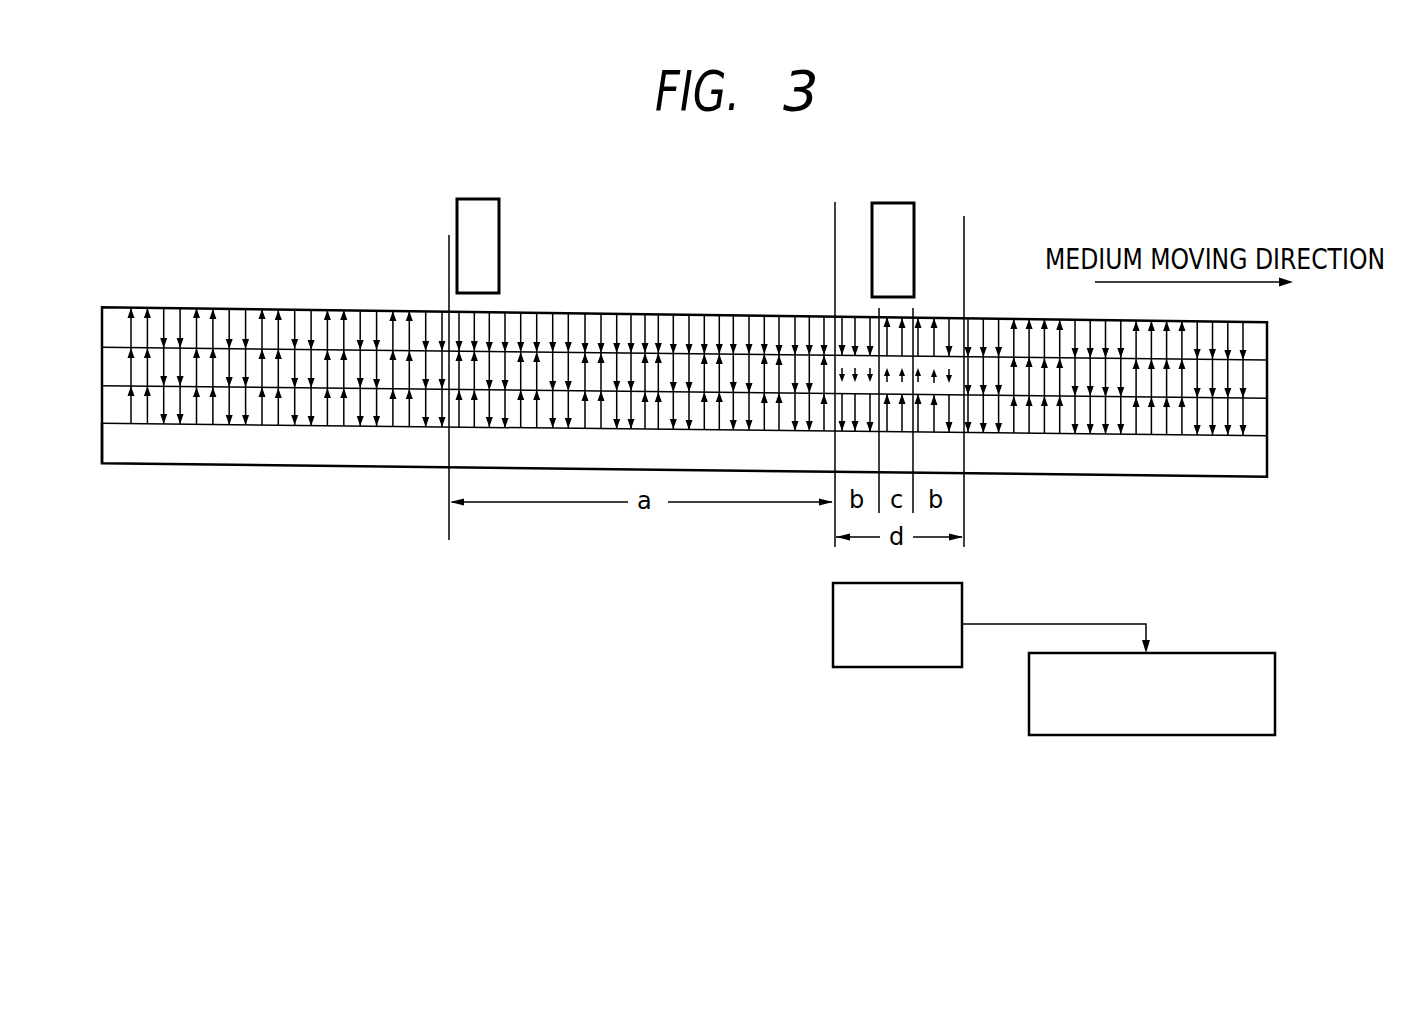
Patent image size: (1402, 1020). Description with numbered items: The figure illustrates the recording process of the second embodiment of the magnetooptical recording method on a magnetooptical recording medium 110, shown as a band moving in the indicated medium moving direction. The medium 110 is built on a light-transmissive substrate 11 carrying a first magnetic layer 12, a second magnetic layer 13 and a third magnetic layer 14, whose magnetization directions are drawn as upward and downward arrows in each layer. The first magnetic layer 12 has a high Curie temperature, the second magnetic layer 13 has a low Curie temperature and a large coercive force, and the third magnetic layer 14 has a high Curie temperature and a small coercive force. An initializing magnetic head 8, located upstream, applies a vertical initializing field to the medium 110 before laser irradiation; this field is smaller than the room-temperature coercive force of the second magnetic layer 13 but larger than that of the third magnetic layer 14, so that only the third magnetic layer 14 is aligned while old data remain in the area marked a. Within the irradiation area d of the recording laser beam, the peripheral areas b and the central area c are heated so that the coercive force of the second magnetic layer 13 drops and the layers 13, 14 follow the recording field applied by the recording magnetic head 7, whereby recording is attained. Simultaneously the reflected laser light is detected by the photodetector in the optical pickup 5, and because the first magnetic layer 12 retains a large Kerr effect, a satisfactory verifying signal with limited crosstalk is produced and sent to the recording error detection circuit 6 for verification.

The magnetooptical recording medium 110 is at (78, 293).
The light-transmissive substrate 11 is at (1267, 453).
The first magnetic layer 12 is at (1267, 412).
The second magnetic layer 13 is at (1267, 372).
The third magnetic layer 14 is at (1267, 325).
The initializing magnetic head 8 is at (499, 208).
The recording magnetic head 7 is at (900, 203).
The optical pickup 5 is at (845, 667).
The recording error detection circuit 6 is at (1206, 653).